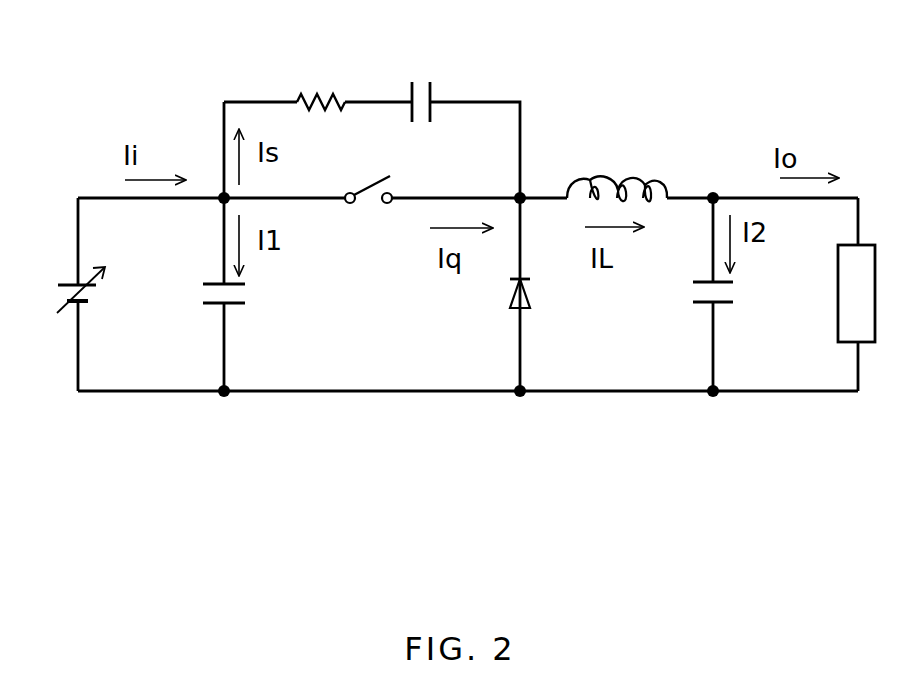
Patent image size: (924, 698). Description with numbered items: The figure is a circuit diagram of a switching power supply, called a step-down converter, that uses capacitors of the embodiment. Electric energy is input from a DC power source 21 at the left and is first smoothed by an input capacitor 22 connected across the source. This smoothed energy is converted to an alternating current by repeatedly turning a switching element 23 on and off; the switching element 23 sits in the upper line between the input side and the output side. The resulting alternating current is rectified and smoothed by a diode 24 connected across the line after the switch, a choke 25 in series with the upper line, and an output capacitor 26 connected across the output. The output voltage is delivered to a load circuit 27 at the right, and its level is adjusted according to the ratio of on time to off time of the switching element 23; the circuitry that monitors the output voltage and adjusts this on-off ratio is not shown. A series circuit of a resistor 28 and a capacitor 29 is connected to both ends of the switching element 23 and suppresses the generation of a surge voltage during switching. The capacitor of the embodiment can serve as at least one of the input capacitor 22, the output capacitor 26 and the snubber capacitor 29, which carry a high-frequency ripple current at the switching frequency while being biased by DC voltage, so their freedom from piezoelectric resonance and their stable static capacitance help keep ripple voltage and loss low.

The DC power source 21 is at (66, 278).
The input capacitor 22 is at (200, 298).
The switching element 23 is at (368, 208).
The diode 24 is at (499, 297).
The choke 25 is at (614, 175).
The output capacitor 26 is at (688, 298).
The load circuit 27 is at (828, 295).
The resistor 28 is at (320, 92).
The snubber capacitor 29 is at (447, 91).